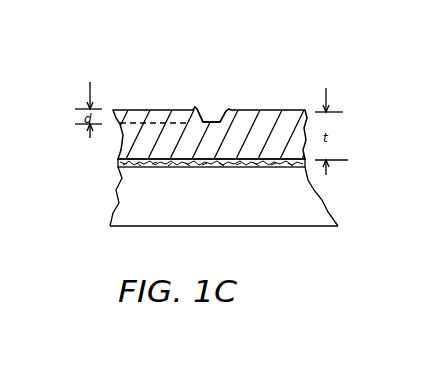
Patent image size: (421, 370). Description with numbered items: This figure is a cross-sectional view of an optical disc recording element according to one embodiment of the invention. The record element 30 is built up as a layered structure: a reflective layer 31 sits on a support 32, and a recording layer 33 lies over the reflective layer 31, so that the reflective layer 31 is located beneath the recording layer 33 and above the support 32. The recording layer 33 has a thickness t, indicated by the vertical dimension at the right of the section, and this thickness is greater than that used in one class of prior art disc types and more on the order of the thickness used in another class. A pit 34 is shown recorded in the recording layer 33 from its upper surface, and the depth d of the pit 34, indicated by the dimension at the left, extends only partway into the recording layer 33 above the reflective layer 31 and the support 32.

The record element 30 is at (217, 153).
The reflective layer 31 is at (117, 164).
The support 32 is at (116, 203).
The recording layer 33 is at (268, 120).
The pit 34 is at (203, 115).